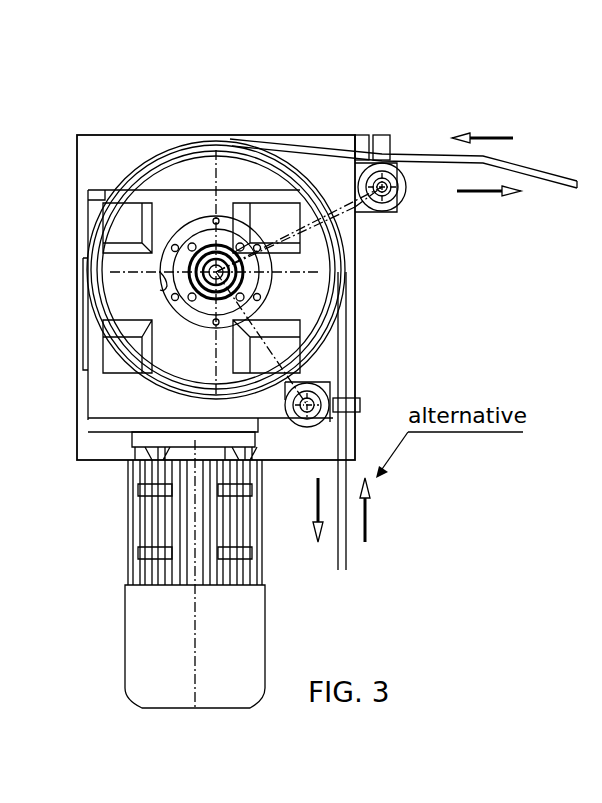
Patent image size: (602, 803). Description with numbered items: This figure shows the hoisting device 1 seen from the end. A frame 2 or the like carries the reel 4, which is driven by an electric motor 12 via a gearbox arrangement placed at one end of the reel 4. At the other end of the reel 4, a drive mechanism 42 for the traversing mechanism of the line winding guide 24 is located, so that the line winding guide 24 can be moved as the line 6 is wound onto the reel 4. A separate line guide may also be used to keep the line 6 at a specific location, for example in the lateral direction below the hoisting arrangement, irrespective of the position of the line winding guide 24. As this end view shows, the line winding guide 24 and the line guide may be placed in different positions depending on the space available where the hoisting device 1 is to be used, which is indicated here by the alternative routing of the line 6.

The hoisting device 1 is at (121, 104).
The frame 2 is at (328, 130).
The reel 4 is at (113, 290).
The line 6 is at (540, 178).
The electric motor 12 is at (128, 515).
The line winding guide 24 is at (390, 153).
The drive mechanism 42 is at (393, 226).